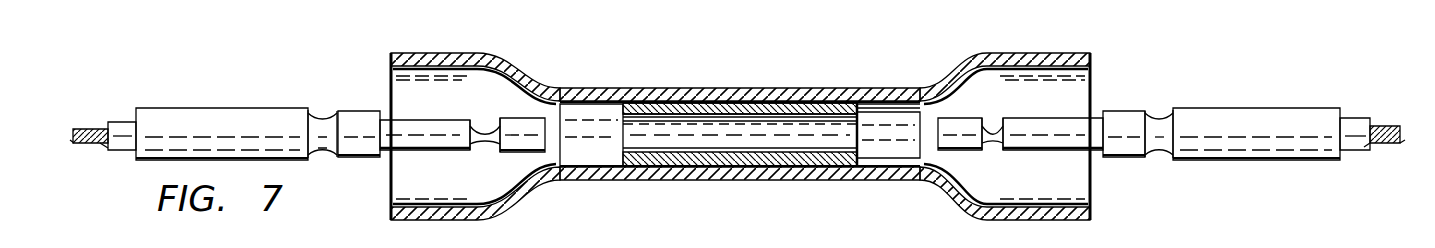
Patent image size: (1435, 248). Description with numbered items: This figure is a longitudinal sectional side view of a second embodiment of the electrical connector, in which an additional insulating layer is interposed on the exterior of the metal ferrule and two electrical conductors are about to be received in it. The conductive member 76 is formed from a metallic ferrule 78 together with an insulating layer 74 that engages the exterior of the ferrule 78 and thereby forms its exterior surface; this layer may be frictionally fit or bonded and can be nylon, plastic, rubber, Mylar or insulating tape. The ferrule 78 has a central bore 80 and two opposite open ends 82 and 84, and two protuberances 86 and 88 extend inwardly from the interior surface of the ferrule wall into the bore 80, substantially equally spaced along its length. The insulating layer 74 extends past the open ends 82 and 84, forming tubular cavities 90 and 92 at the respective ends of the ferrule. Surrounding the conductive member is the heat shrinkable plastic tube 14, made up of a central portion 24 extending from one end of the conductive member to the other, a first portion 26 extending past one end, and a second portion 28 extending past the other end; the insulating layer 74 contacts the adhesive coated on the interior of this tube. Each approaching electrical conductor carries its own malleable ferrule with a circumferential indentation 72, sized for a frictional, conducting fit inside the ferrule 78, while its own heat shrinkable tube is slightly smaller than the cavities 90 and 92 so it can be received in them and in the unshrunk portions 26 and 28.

The heat shrinkable plastic tube 14 is at (600, 86).
The central portion 24 is at (647, 88).
The first portion 26 is at (1003, 52).
The second portion 28 is at (478, 53).
The circumferential indentation 72 is at (993, 118).
The insulating layer 74 is at (752, 97).
The conductive member 76 is at (800, 97).
The metallic ferrule 78 is at (713, 101).
The central bore 80 is at (737, 137).
The open end 82 is at (862, 148).
The open end 84 is at (618, 152).
The protuberance 86 is at (677, 117).
The protuberance 88 is at (848, 115).
The tubular cavity 90 is at (885, 142).
The tubular cavity 92 is at (590, 147).